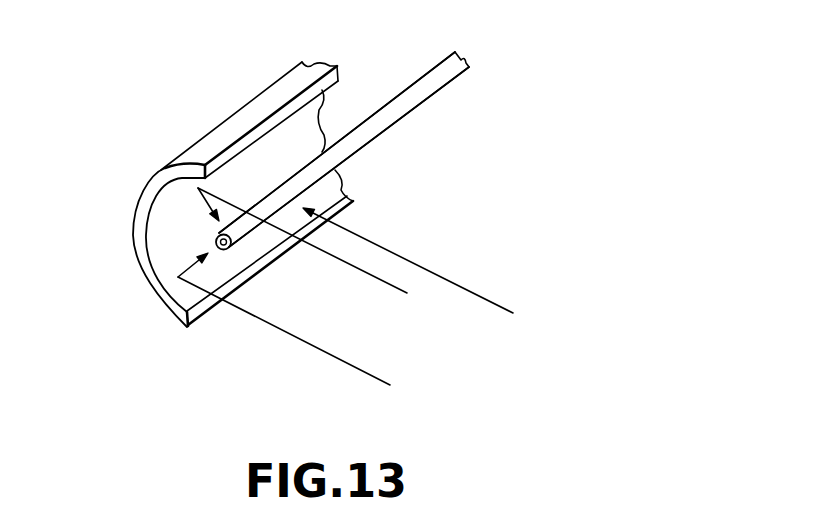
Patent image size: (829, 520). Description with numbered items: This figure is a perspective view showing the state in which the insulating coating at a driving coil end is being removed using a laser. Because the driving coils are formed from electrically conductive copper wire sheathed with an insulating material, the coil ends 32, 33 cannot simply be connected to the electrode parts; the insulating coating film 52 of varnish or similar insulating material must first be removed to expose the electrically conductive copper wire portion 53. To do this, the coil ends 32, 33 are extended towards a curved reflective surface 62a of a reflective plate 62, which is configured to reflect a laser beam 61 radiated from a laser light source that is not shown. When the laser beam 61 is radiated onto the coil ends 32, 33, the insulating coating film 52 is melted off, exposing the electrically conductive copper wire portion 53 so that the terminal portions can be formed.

The coil end 32 is at (398, 106).
The coil end 33 is at (344, 149).
The insulating coating film 52 is at (232, 247).
The electrically conductive copper wire portion 53 is at (224, 250).
The laser beam 61 is at (415, 261).
The reflective plate 62 is at (136, 235).
The curved reflective surface 62a is at (246, 164).